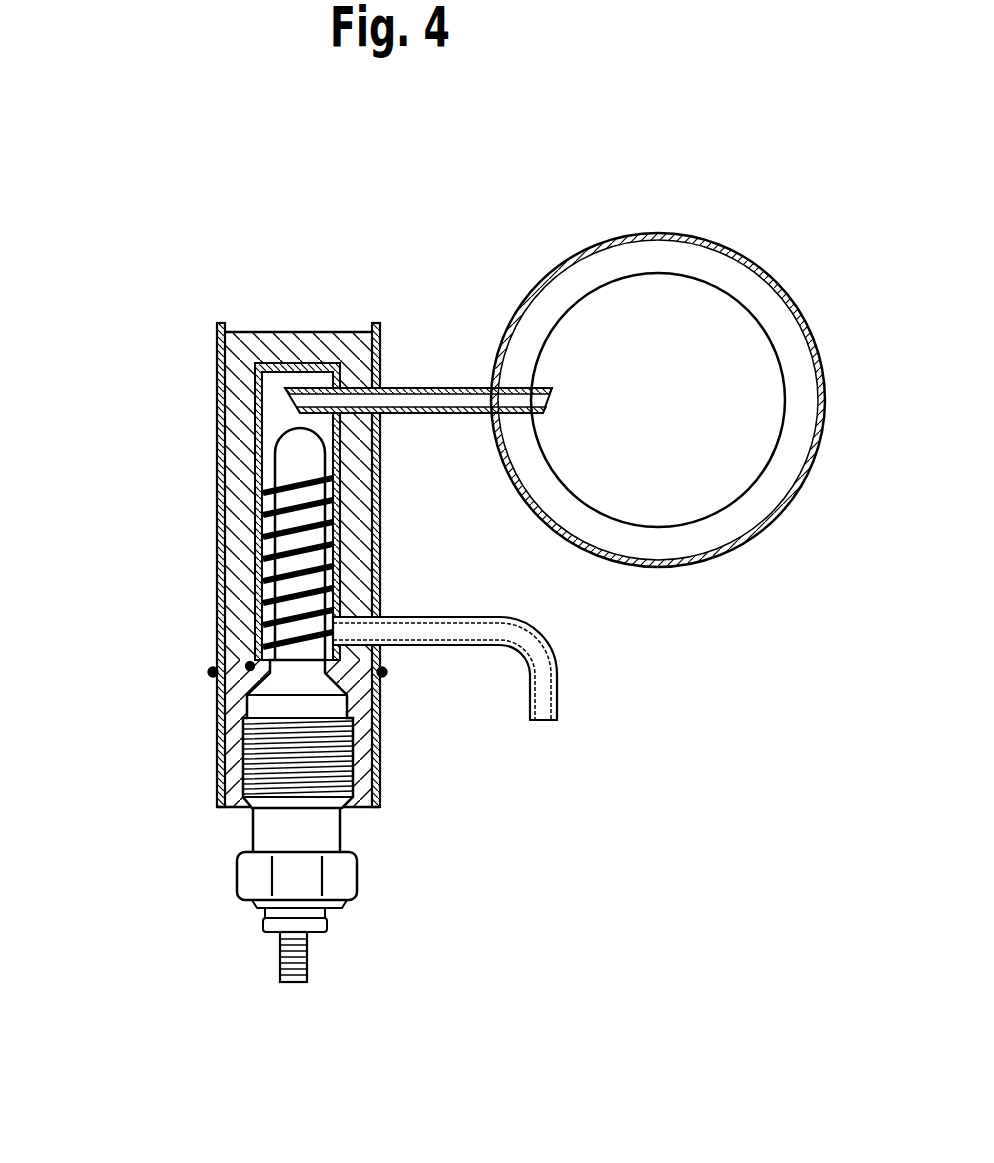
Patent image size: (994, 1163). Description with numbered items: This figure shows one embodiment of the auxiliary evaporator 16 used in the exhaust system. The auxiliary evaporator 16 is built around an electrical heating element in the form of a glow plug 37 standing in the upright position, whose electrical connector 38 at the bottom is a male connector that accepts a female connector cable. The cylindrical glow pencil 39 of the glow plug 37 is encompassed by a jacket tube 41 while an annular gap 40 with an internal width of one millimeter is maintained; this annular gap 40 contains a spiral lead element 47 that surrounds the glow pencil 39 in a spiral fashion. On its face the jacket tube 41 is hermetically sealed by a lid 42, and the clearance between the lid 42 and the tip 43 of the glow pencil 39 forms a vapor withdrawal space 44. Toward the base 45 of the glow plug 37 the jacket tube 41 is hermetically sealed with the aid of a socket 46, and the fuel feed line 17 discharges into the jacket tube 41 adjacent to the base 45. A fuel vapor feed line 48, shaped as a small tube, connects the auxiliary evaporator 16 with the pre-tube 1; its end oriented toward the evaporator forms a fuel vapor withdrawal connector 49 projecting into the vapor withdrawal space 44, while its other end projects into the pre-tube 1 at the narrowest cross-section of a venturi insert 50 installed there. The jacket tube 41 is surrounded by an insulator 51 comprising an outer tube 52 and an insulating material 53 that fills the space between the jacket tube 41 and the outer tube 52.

The pre-tube 1 is at (705, 380).
The auxiliary evaporator 16 is at (182, 486).
The fuel feed line 17 is at (557, 680).
The glow plug 37 is at (250, 667).
The electrical connector 38 is at (306, 957).
The glow pencil 39 is at (288, 529).
The annular gap 40 is at (272, 556).
The jacket tube 41 is at (262, 503).
The lid 42 is at (342, 452).
The tip 43 is at (300, 428).
The vapor withdrawal space 44 is at (225, 502).
The base 45 is at (330, 700).
The socket 46 is at (365, 775).
The spiral lead element 47 is at (257, 618).
The fuel vapor feed line 48 is at (418, 333).
The fuel vapor withdrawal connector 49 is at (305, 402).
The venturi insert 50 is at (797, 403).
The insulator 51 is at (253, 499).
The outer tube 52 is at (215, 333).
The insulating material 53 is at (352, 497).